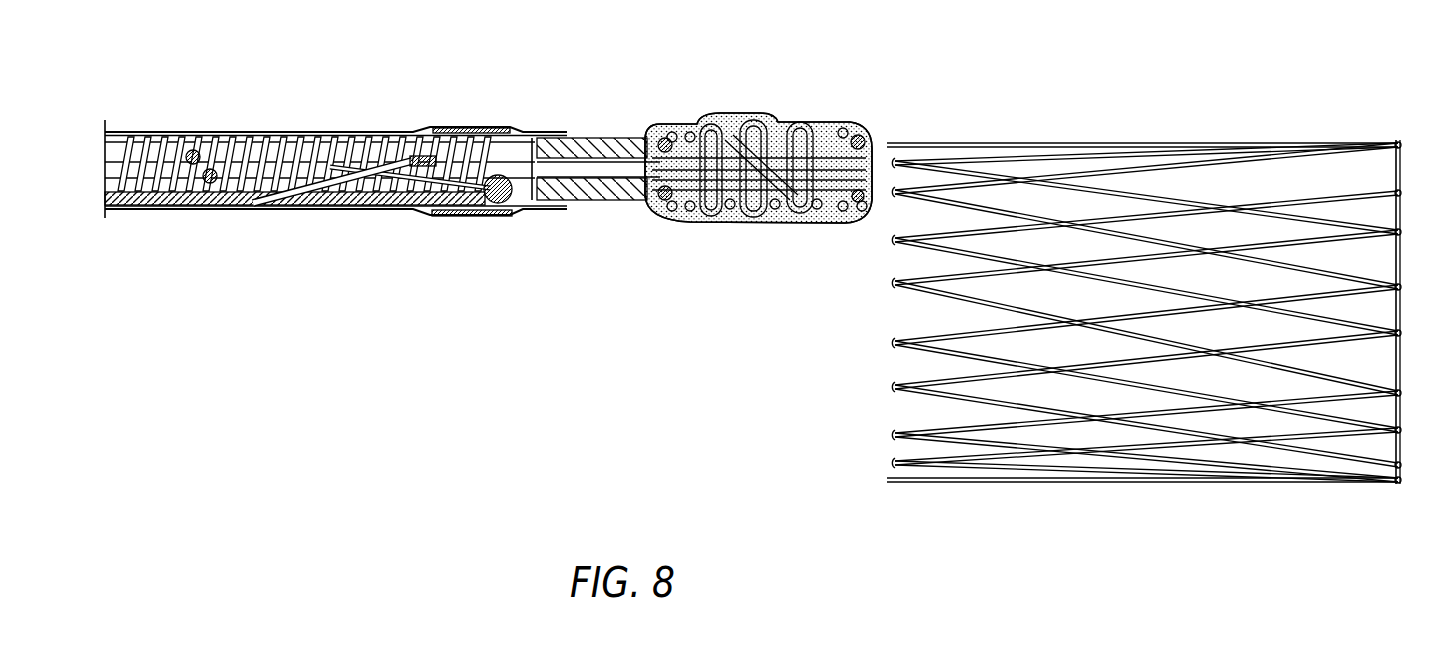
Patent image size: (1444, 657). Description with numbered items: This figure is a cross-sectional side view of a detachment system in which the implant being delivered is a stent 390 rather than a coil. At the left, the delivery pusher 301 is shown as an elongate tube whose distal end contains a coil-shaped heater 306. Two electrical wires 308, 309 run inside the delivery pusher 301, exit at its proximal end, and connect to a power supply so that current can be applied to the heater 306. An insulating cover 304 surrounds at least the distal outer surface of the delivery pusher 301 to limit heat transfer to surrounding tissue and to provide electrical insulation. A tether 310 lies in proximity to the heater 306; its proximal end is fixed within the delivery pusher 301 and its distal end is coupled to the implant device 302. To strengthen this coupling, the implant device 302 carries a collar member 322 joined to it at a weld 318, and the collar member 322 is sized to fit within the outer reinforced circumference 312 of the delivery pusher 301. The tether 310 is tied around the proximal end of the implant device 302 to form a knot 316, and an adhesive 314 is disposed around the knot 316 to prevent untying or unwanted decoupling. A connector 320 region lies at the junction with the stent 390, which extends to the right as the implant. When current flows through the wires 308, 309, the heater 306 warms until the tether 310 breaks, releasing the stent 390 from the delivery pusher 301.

The delivery pusher 301 is at (232, 115).
The implant device 302 is at (850, 225).
The insulating cover 304 is at (145, 125).
The heater 306 is at (514, 165).
The electrical wire 308 is at (302, 207).
The electrical wire 309 is at (162, 207).
The tether 310 is at (377, 150).
The outer reinforced circumference 312 is at (468, 216).
The adhesive 314 is at (834, 125).
The knot 316 is at (768, 115).
The weld 318 is at (665, 138).
The connector 320 is at (865, 138).
The collar member 322 is at (602, 145).
The stent 390 is at (1203, 140).